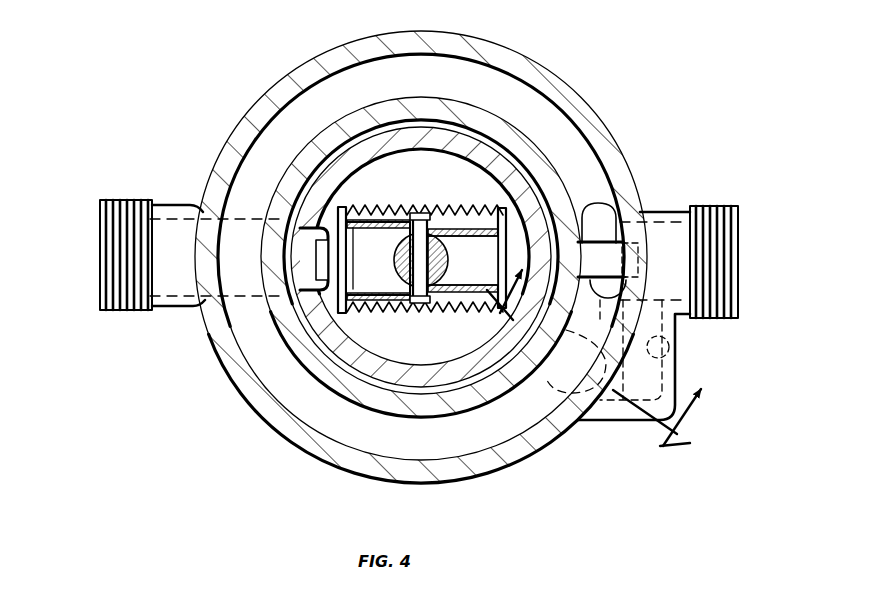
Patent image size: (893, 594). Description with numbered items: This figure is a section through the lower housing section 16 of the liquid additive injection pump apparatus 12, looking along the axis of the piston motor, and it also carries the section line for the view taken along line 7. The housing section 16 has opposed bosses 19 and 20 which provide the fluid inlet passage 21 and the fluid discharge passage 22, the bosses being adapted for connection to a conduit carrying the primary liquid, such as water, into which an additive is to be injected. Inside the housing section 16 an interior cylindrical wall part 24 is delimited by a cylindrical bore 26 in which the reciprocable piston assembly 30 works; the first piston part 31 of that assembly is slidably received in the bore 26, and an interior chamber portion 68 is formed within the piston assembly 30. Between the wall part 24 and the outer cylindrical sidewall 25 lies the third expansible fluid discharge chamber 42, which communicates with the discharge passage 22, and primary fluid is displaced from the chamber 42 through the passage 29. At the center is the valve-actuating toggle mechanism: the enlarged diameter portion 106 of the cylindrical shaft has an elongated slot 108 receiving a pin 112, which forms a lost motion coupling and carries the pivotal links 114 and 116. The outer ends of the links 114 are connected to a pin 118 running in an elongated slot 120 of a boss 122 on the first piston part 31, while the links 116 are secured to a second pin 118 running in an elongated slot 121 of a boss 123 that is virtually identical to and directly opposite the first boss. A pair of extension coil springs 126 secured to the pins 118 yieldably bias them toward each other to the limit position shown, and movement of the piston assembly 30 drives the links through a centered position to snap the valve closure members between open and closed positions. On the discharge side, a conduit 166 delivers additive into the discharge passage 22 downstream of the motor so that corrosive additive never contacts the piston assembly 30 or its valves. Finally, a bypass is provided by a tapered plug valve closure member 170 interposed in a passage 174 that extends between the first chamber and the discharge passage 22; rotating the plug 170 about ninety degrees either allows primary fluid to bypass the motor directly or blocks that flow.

The liquid additive injection pump apparatus 12 is at (256, 74).
The lower housing section 16 is at (374, 34).
The inlet boss 19 is at (167, 203).
The discharge boss 20 is at (658, 210).
The fluid inlet passage 21 is at (98, 291).
The fluid discharge passage 22 is at (741, 273).
The interior cylindrical wall part 24 is at (336, 134).
The outer cylindrical sidewall 25 is at (397, 38).
The cylindrical bore 26 is at (511, 146).
The passage 29 is at (642, 295).
The reciprocable piston assembly 30 is at (412, 397).
The first piston part 31 is at (333, 377).
The third expansible fluid discharge chamber 42 is at (482, 82).
The interior chamber portion 68 is at (427, 168).
The enlarged diameter portion 106 is at (450, 248).
The elongated slot 108 is at (442, 311).
The pin 112 is at (445, 208).
The links 114 is at (284, 182).
The links 116 is at (480, 206).
The pins 118 is at (286, 296).
The elongated slot 120 is at (300, 228).
The elongated slot 121 is at (572, 231).
The boss 122 is at (343, 312).
The boss 123 is at (542, 356).
The extension coil springs 126 is at (372, 205).
The conduit 166 is at (638, 229).
The tapered plug valve closure member 170 is at (606, 381).
The bypass passage 174 is at (670, 347).
The section line 7- 7 is at (582, 368).